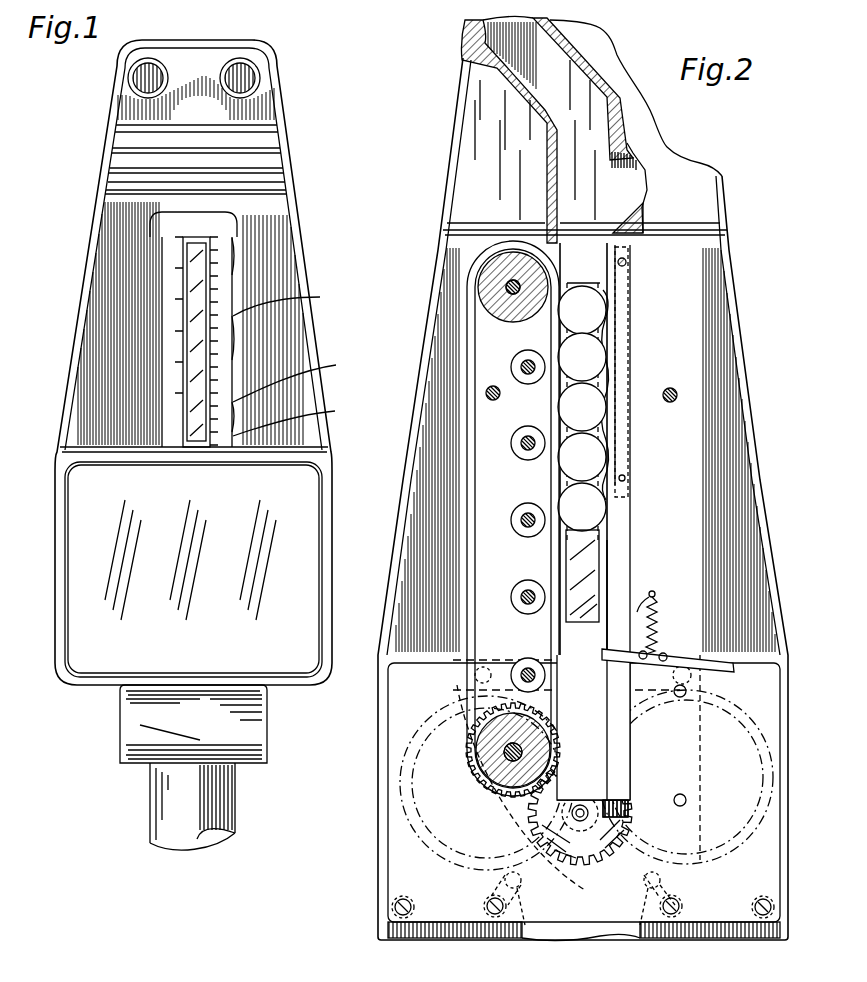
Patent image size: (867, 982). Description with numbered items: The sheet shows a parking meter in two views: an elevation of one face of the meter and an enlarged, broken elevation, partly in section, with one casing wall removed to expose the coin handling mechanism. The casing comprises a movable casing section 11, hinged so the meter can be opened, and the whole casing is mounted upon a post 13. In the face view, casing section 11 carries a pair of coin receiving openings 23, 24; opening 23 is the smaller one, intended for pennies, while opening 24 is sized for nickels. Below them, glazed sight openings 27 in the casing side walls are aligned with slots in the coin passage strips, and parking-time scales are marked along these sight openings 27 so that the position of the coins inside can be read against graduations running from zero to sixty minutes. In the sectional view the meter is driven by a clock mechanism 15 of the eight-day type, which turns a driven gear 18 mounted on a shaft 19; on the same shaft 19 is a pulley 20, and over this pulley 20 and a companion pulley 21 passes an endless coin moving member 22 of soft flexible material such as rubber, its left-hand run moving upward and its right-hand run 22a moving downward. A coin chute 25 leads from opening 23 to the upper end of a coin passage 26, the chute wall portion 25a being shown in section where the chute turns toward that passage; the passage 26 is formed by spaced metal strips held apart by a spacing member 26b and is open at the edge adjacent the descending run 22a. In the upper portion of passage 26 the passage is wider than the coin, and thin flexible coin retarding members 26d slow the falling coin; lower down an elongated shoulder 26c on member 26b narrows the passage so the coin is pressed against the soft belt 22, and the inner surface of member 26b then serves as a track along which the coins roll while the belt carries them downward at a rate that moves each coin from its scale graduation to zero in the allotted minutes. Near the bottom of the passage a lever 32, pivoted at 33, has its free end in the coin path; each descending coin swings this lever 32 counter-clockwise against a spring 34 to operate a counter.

In FIG. 1, the movable casing section 11 is at (288, 234).
In FIG. 1, the post 13 is at (232, 806).
In FIG. 1, the coin receiving opening 23 is at (126, 78).
In FIG. 1, the coin receiving opening 24 is at (262, 78).
In FIG. 1, the glazed sight openings 27 is at (186, 400).
In FIG. 2, the glazed sight openings 27 is at (577, 566).
In FIG. 2, the clock mechanism 15 is at (411, 867).
In FIG. 2, the driven gear 18 is at (470, 785).
In FIG. 2, the shaft 19 is at (512, 762).
In FIG. 2, the pulley 20 is at (485, 760).
In FIG. 2, the companion pulley 21 is at (516, 262).
In FIG. 2, the coin moving member 22 is at (472, 266).
In FIG. 2, the run of the coin moving member 22a is at (553, 410).
In FIG. 2, the coin chute 25 is at (575, 78).
In FIG. 2, the inner wall 25a is at (628, 180).
In FIG. 2, the coin passage 26 is at (602, 251).
In FIG. 2, the spacing member 26b is at (620, 548).
In FIG. 2, the elongated shoulder 26c is at (612, 504).
In FIG. 2, the coin retarding members 26d is at (608, 440).
In FIG. 2, the lever 32 is at (733, 674).
In FIG. 2, the pivot 33 is at (664, 653).
In FIG. 2, the spring 34 is at (652, 591).